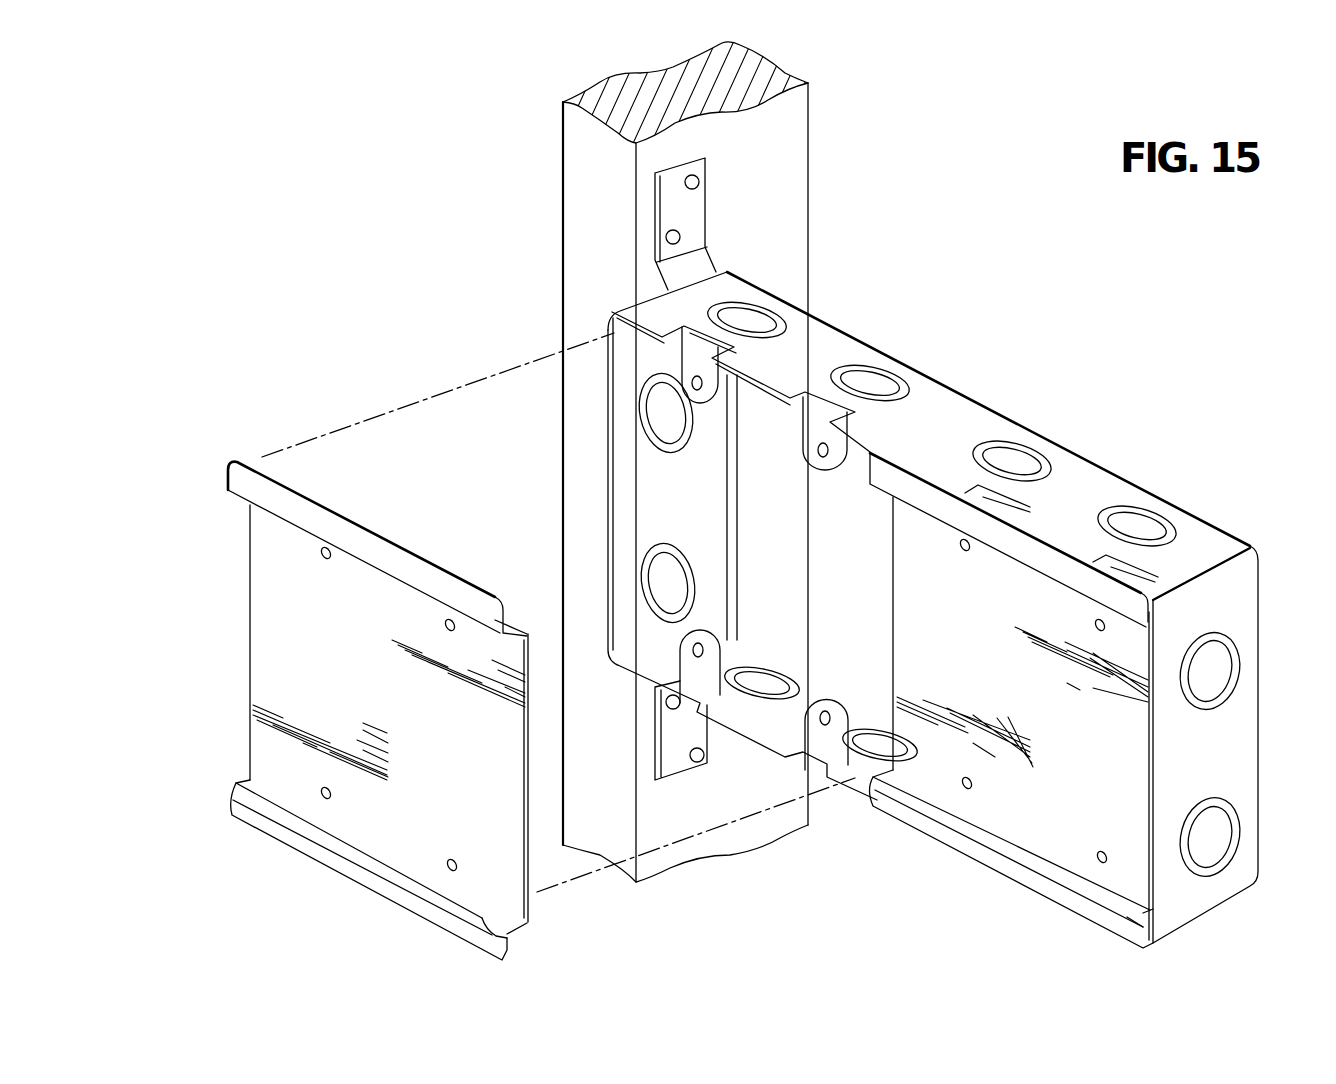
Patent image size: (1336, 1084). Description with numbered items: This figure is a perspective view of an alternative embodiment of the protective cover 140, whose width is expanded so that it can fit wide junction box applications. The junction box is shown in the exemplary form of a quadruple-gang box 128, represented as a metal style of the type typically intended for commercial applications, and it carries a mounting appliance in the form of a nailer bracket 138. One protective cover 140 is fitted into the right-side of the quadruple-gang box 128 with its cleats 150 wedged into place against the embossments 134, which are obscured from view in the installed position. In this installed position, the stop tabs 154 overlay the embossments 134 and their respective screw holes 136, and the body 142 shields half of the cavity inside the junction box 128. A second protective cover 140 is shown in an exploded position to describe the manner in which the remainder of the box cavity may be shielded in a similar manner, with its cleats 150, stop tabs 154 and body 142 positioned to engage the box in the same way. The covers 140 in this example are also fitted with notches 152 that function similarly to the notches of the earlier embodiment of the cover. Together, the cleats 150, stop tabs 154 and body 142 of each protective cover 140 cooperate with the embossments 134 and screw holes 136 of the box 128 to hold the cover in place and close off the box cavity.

The quadruple-gang box 128 is at (1056, 431).
The embossments 134 is at (832, 468).
The screw holes 136 is at (822, 452).
The nailer bracket 138 is at (690, 207).
The protective cover 140 is at (703, 706).
The body 142 is at (390, 684).
The cleats 150 is at (358, 848).
The notches 152 is at (508, 925).
The stop tabs 154 is at (375, 552).